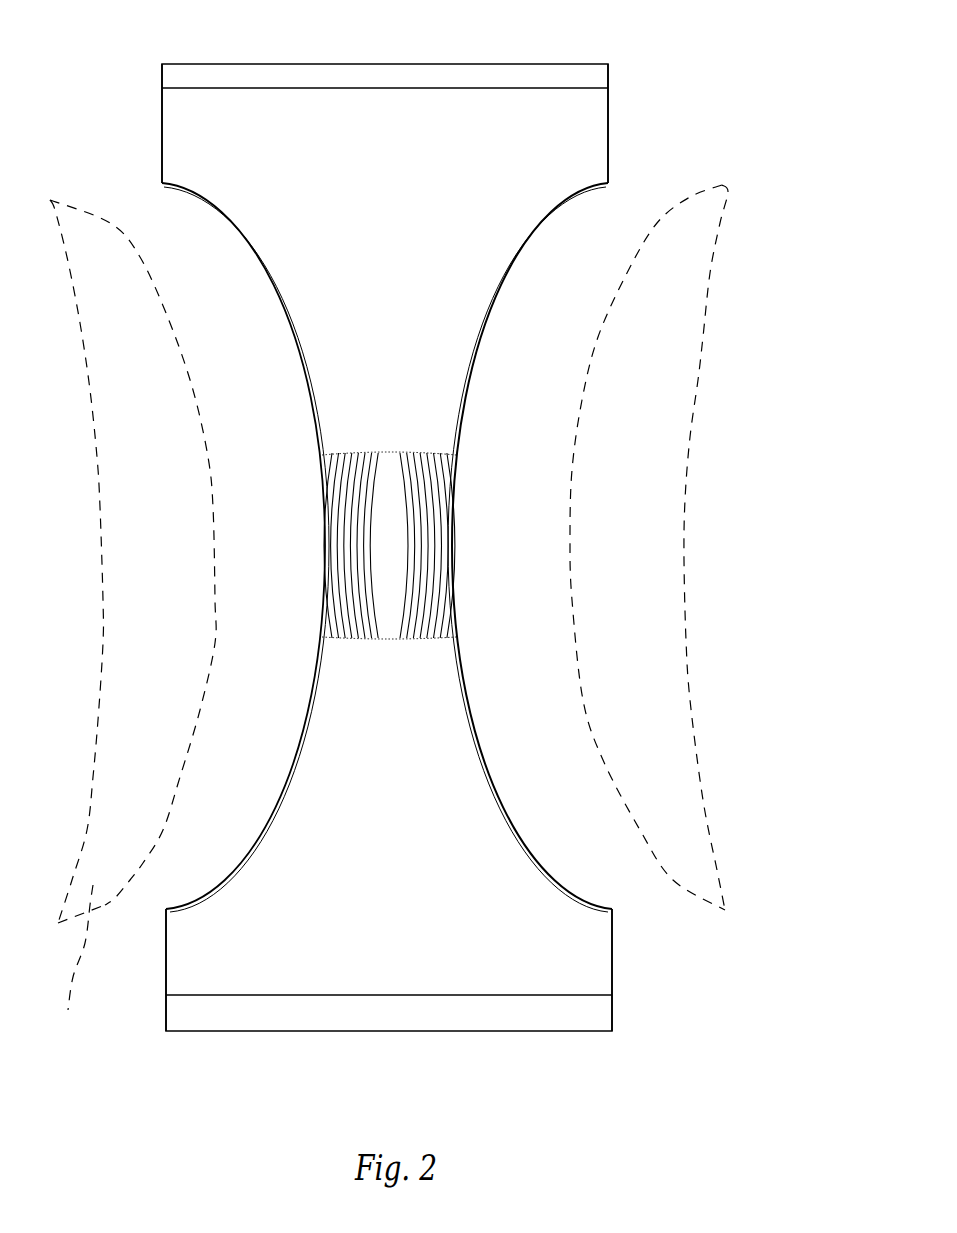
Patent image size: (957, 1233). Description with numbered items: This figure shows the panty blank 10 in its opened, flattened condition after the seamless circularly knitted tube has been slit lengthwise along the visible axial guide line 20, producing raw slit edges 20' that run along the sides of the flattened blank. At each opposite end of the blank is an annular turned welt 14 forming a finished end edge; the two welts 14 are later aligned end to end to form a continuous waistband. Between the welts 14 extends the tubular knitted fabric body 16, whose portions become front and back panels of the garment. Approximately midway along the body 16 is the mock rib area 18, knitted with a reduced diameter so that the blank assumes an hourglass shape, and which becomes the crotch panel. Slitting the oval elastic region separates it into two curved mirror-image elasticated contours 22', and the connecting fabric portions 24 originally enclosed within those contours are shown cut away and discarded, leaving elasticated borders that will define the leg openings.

The panty blank 10 is at (368, 560).
The annular turned welt 14 is at (474, 76).
The tubular knitted fabric body 16 is at (425, 963).
The mock rib area 18 is at (420, 523).
The axial line 20 is at (339, 93).
The raw slit edge 20' is at (368, 565).
The elasticated contour 22' is at (245, 547).
The connecting fabric portion 24 is at (688, 630).